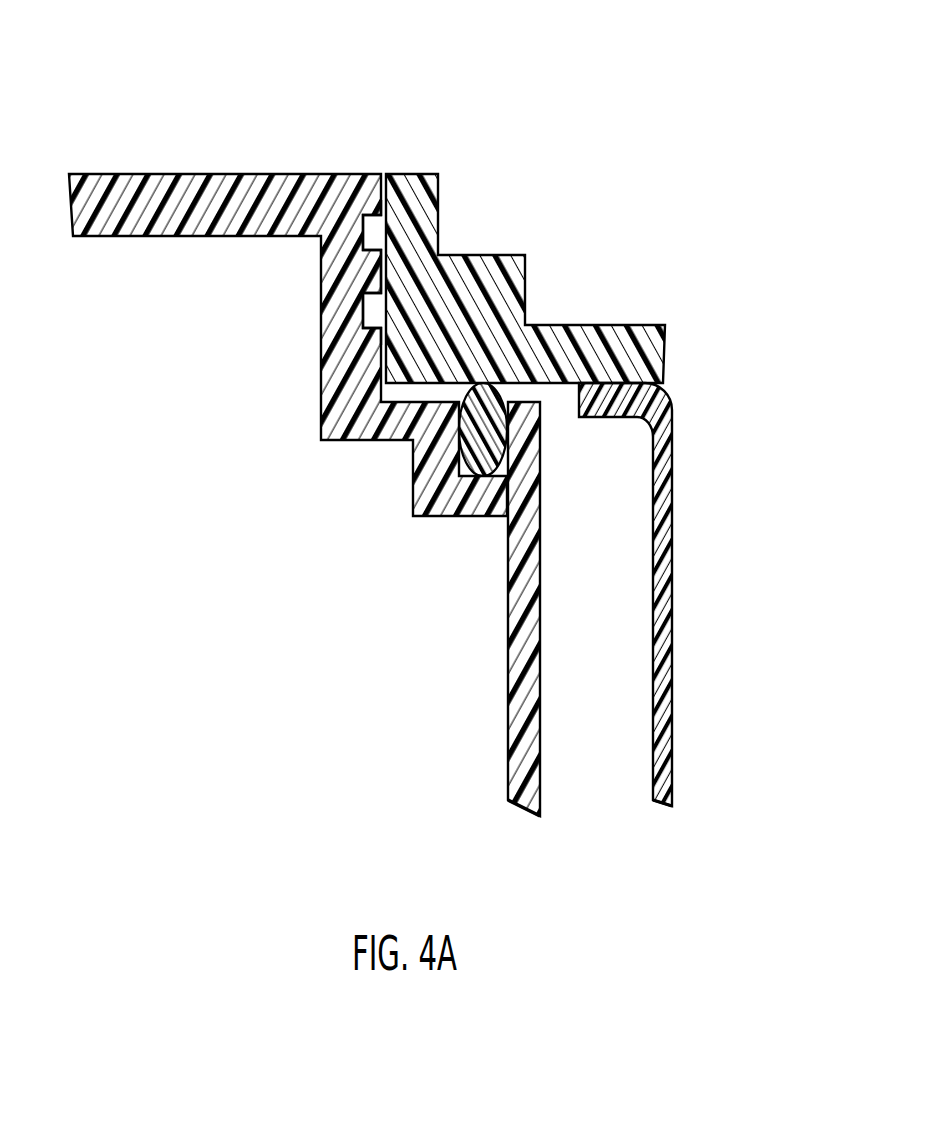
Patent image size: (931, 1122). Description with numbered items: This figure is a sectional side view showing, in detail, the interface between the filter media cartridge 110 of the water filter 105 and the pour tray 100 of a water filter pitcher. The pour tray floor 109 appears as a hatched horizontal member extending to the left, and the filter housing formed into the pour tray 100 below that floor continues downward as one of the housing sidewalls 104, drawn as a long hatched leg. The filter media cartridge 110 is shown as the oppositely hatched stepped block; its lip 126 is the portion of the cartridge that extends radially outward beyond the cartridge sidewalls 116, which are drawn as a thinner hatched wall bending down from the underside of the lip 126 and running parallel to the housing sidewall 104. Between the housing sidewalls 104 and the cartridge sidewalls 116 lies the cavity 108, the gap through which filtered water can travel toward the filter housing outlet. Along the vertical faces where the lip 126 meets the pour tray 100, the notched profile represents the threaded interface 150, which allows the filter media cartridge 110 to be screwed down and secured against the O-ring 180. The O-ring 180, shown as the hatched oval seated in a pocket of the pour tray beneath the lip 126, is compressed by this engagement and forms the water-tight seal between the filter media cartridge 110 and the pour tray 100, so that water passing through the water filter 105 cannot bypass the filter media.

The pour tray 100 is at (438, 411).
The housing sidewalls 104 is at (504, 609).
The water filter 105 is at (409, 443).
The cavity 108 is at (557, 657).
The pour tray floor 109 is at (288, 308).
The filter media cartridge 110 is at (597, 460).
The cartridge sidewalls 116 is at (653, 575).
The lip 126 is at (600, 322).
The threaded interface 150 is at (363, 309).
The O-ring 180 is at (484, 460).